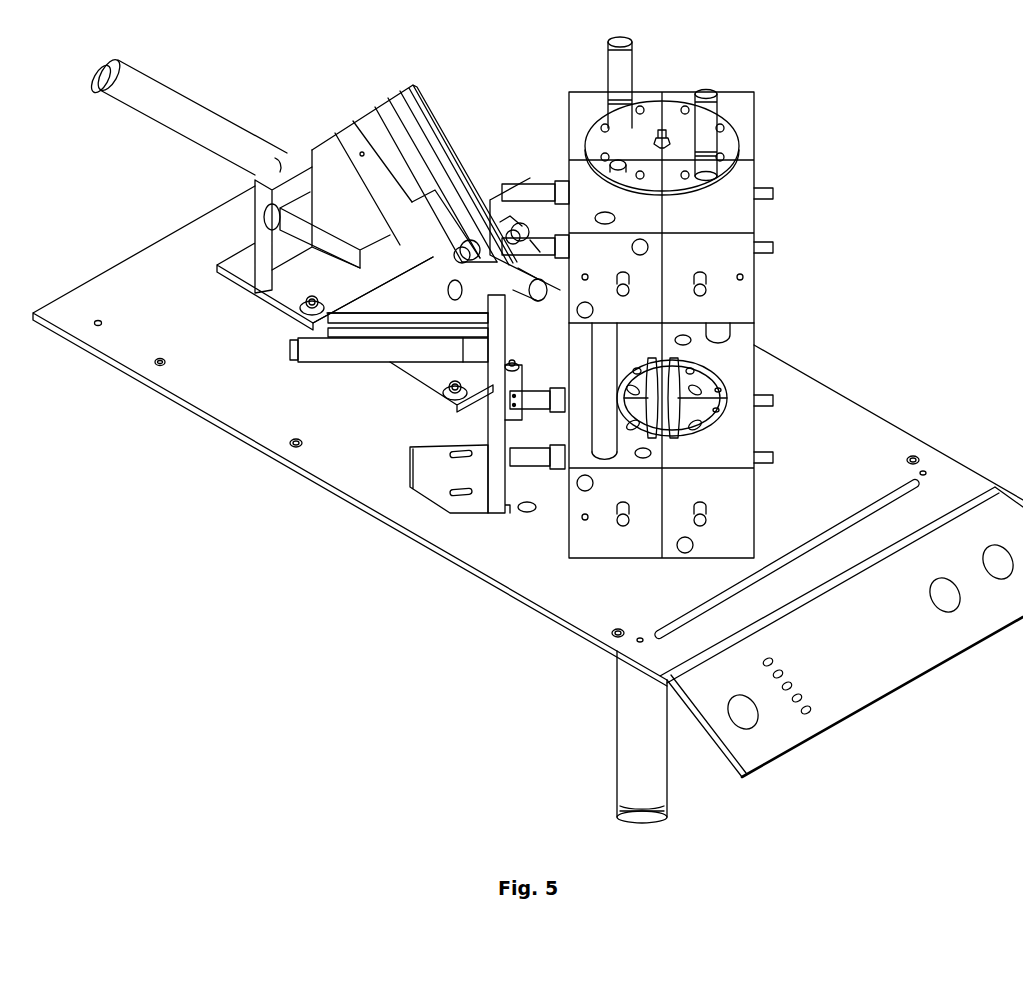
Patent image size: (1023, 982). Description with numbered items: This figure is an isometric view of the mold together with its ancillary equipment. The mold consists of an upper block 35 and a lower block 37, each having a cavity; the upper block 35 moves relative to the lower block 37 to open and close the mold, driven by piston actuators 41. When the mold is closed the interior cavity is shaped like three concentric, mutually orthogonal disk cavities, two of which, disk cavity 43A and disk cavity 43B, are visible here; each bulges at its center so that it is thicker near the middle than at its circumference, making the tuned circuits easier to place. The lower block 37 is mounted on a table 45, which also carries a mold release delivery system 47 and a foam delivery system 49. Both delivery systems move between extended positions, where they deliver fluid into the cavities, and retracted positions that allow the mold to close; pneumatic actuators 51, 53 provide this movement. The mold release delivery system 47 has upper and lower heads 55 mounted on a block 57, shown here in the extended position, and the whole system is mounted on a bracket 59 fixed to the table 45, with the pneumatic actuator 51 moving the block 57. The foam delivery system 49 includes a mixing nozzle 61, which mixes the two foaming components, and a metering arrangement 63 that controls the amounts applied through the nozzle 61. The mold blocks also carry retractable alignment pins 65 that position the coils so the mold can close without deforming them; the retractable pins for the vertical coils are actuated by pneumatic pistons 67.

The upper block 35 is at (728, 310).
The lower block 37 is at (742, 523).
The piston actuators 41 is at (623, 687).
The disk cavity 43A is at (703, 407).
The disk cavity 43B is at (668, 382).
The table 45 is at (212, 378).
The mold release delivery system 47 is at (545, 355).
The foam delivery system 49 is at (453, 108).
The pneumatic actuator 51 is at (328, 352).
The pneumatic actuator 53 is at (172, 98).
The heads 55 is at (512, 365).
The block 57 is at (515, 322).
The bracket 59 is at (488, 432).
The mixing nozzle 61 is at (518, 268).
The metering arrangement 63 is at (527, 227).
The retractable alignment pins 65 is at (725, 387).
The pneumatic pistons 67 is at (535, 457).